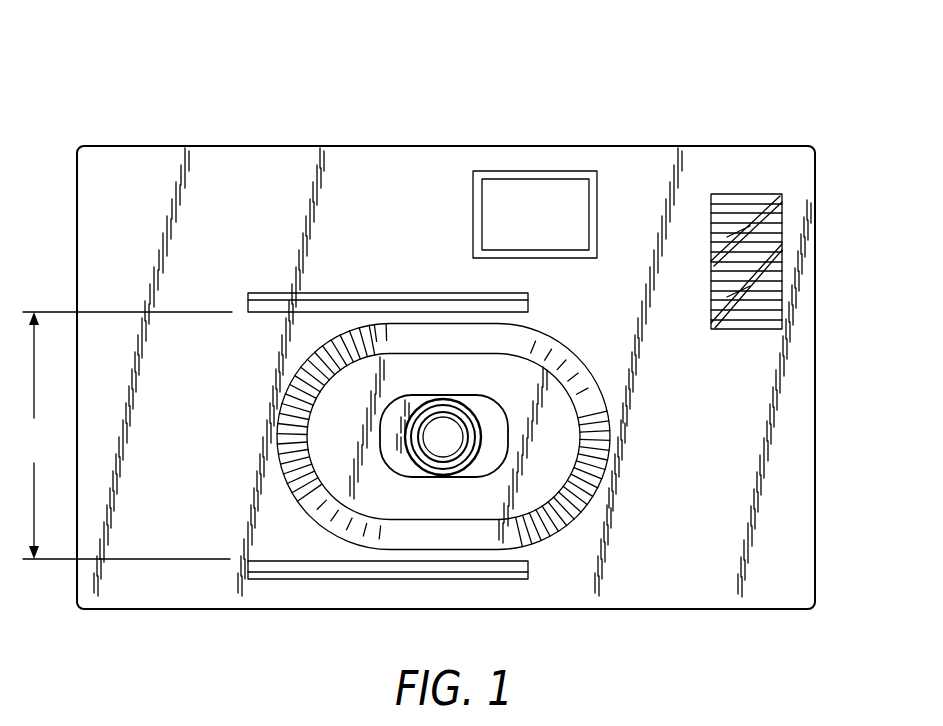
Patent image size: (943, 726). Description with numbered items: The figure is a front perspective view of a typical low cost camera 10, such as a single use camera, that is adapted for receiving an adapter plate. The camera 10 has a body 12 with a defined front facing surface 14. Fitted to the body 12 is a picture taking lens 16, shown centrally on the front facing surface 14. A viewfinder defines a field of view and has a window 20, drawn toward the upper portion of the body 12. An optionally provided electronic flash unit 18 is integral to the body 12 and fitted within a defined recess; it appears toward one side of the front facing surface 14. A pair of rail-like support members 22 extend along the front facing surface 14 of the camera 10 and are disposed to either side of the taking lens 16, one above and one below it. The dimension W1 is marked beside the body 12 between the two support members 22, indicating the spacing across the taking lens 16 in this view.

The camera 10 is at (123, 120).
The body 12 is at (298, 140).
The front facing surface 14 is at (782, 498).
The picture taking lens 16 is at (468, 432).
The electronic flash unit 18 is at (733, 194).
The window 20 is at (565, 203).
The rail-like support members 22 is at (430, 292).
The width W1 is at (125, 435).